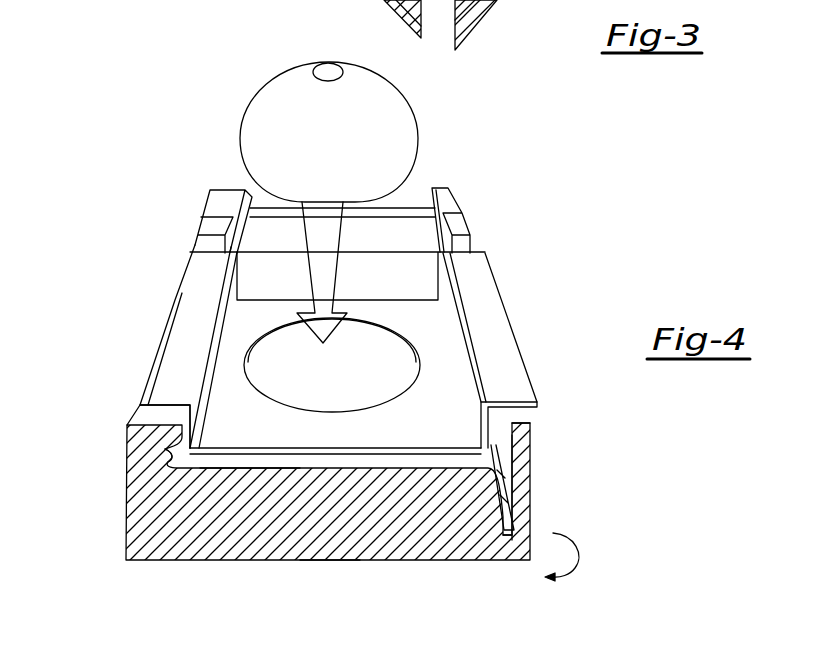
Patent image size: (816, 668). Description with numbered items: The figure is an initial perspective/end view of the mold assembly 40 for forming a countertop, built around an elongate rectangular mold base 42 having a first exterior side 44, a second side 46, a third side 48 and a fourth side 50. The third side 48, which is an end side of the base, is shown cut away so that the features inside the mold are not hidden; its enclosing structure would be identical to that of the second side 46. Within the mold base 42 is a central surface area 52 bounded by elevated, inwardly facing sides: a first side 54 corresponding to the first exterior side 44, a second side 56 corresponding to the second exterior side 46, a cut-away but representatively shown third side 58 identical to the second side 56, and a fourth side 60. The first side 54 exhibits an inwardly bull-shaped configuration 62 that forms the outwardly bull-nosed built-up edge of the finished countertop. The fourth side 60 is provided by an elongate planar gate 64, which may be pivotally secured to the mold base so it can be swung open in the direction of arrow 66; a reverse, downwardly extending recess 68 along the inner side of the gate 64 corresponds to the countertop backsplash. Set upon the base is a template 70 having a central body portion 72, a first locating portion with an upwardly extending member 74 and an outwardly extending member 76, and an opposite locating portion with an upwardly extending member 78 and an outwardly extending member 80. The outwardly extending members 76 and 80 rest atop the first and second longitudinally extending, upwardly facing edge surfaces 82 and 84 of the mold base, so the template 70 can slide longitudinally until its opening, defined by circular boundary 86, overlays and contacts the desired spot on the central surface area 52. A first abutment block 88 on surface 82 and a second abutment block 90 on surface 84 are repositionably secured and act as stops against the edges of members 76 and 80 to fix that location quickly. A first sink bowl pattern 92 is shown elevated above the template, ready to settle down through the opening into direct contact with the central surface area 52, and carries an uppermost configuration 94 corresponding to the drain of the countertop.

The mold assembly 40 is at (278, 171).
The mold base 42 is at (335, 274).
The first exterior side 44 is at (343, 514).
The second side 46 is at (419, 195).
The third side 48 is at (322, 553).
The fourth side 50 is at (563, 512).
The central surface area 52 is at (372, 380).
The first side 54 is at (148, 448).
The second side 56 is at (392, 235).
The third side 58 is at (394, 613).
The fourth side 60 is at (512, 456).
The inwardly bull-shaped configuration 62 is at (175, 457).
The gate 64 is at (522, 490).
The arrow 66 is at (578, 553).
The recess 68 is at (505, 556).
The template 70 is at (335, 274).
The central body portion 72 is at (444, 433).
The upwardly extending member 74 is at (220, 330).
The outwardly extending member 76 is at (190, 297).
The upwardly extending member 78 is at (452, 319).
The outwardly extending member 80 is at (496, 310).
The first longitudinally extending edge surface 82 is at (180, 429).
The second longitudinally extending edge surface 84 is at (520, 418).
The circular boundary 86 is at (276, 399).
The first abutment block 88 is at (217, 217).
The second abutment block 90 is at (458, 225).
The first sink bowl pattern 92 is at (262, 92).
The uppermost configuration 94 is at (328, 72).